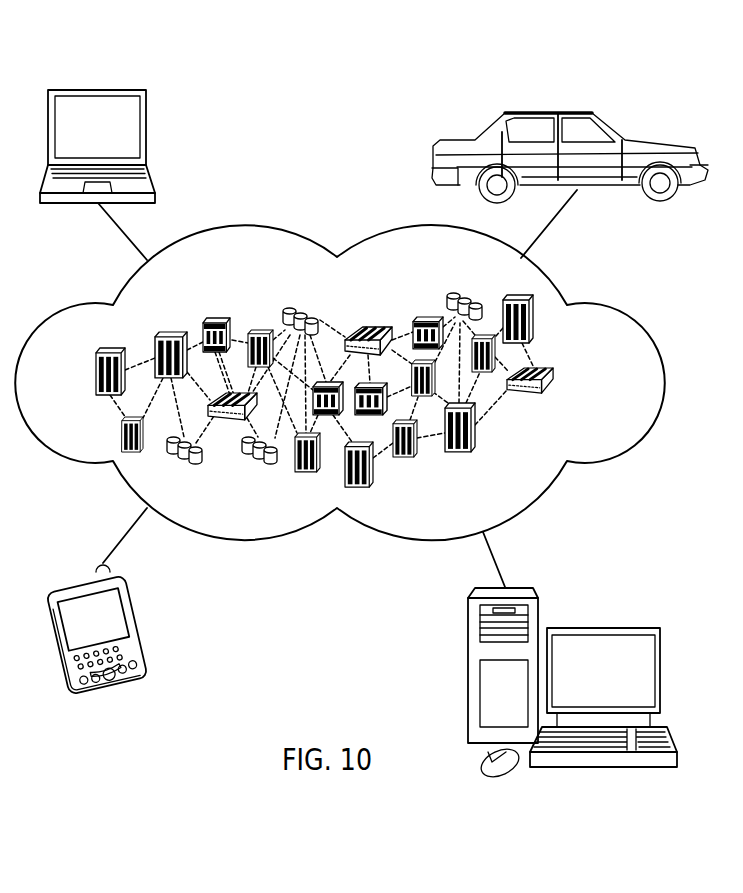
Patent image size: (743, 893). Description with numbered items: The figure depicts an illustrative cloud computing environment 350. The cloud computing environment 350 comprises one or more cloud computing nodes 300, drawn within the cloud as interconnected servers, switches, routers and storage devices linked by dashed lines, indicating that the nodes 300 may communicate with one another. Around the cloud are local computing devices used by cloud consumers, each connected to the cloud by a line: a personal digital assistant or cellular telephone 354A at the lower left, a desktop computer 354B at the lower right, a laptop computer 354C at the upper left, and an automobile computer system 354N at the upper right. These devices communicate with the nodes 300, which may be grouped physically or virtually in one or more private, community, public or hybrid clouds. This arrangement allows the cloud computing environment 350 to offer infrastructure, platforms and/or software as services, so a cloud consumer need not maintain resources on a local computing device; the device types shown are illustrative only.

The cloud computing node 300 is at (563, 383).
The cloud computing environment 350 is at (613, 307).
The personal digital assistant or cellular telephone 354A is at (80, 578).
The desktop computer 354B is at (603, 628).
The laptop computer 354C is at (97, 90).
The automobile computer system 354N is at (552, 112).